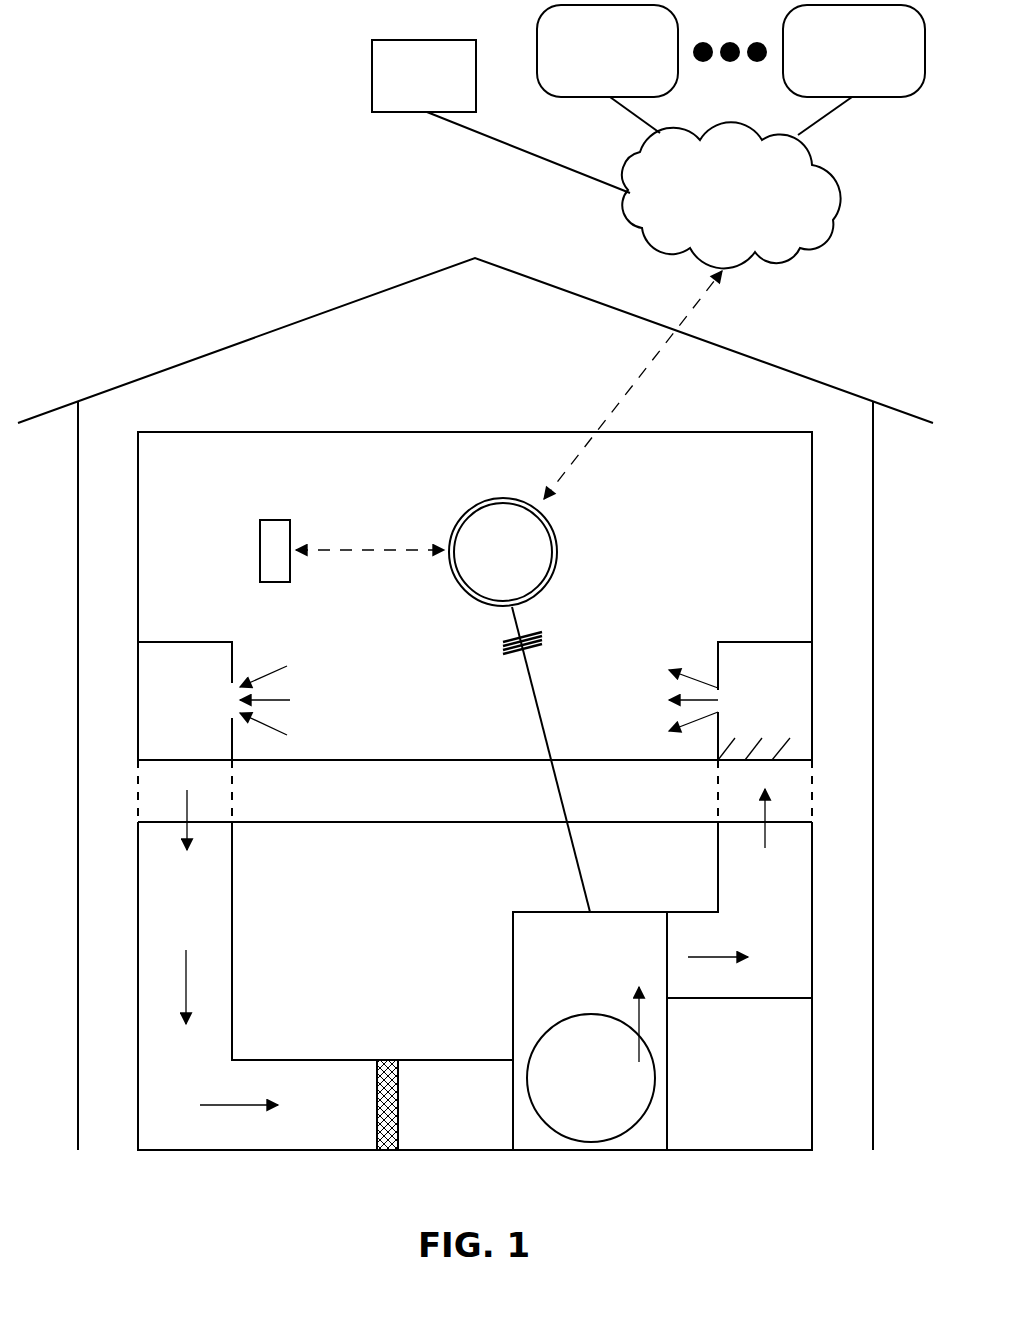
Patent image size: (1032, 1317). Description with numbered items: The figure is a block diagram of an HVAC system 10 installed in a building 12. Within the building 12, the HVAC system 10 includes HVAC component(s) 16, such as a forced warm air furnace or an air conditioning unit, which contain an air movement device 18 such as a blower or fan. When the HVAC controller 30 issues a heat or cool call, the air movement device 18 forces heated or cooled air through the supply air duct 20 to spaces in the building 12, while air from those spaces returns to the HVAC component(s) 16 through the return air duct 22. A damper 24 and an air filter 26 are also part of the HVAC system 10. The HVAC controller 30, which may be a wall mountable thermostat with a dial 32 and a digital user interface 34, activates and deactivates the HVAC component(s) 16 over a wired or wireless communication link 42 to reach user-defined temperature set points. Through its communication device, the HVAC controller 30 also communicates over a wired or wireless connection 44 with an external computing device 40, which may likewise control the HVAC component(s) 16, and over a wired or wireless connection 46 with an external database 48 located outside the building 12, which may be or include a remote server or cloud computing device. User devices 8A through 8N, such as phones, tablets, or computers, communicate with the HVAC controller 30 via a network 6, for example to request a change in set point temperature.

The network 6 is at (639, 182).
The user device 8A is at (607, 51).
The user device 8N is at (854, 51).
The HVAC system 10 is at (172, 232).
The building 12 is at (731, 349).
The HVAC component 16 is at (667, 1095).
The air movement device 18 is at (590, 1014).
The supply air duct 20 is at (776, 912).
The return air duct 22 is at (166, 895).
The damper 24 is at (770, 705).
The air filter 26 is at (398, 1112).
The HVAC controller 30 is at (479, 539).
The dial 32 is at (524, 502).
The digital user interface 34 is at (514, 568).
The external computing device 40 is at (275, 519).
The wired or wireless communication link 42 is at (538, 712).
The wired or wireless connection 44 is at (350, 552).
The wired or wireless connection 46 is at (626, 396).
The external database 48 is at (413, 38).